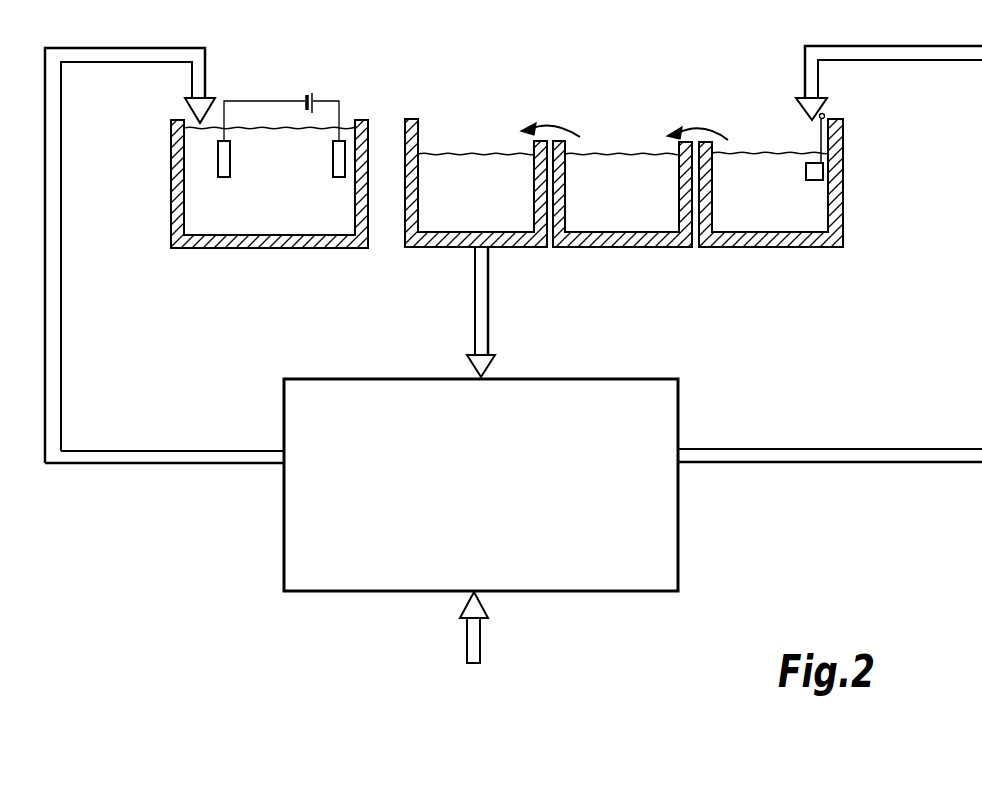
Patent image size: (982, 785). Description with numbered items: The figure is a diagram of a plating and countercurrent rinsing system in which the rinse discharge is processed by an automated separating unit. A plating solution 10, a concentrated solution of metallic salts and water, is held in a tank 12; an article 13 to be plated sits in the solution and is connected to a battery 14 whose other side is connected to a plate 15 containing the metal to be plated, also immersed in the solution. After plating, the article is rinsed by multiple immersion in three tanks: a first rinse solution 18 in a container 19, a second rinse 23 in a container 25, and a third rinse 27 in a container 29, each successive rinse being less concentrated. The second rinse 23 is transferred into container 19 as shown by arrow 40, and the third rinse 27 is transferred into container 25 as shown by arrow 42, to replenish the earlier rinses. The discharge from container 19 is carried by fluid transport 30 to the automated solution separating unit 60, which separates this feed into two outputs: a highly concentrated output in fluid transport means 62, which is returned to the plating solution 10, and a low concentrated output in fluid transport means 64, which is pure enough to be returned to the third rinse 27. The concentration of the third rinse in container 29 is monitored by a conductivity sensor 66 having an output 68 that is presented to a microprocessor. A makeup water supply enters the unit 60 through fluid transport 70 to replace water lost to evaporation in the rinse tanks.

The plating solution 10 is at (318, 163).
The tank 12 is at (250, 250).
The article 13 is at (218, 168).
The battery 14 is at (313, 96).
The plate 15 is at (339, 177).
The first rinse solution 18 is at (509, 182).
The container 19 is at (446, 247).
The second rinse 23 is at (655, 182).
The container 25 is at (612, 248).
The third rinse 27 is at (803, 181).
The container 29 is at (768, 247).
The fluid transport 30 is at (490, 327).
The arrow 40 is at (552, 122).
The arrow 42 is at (694, 126).
The automated solution separating unit 60 is at (553, 377).
The fluid transport means 62 is at (160, 450).
The fluid transport means 64 is at (772, 447).
The conductivity sensor 66 is at (820, 182).
The output 68 is at (825, 115).
The fluid transport 70 is at (483, 645).